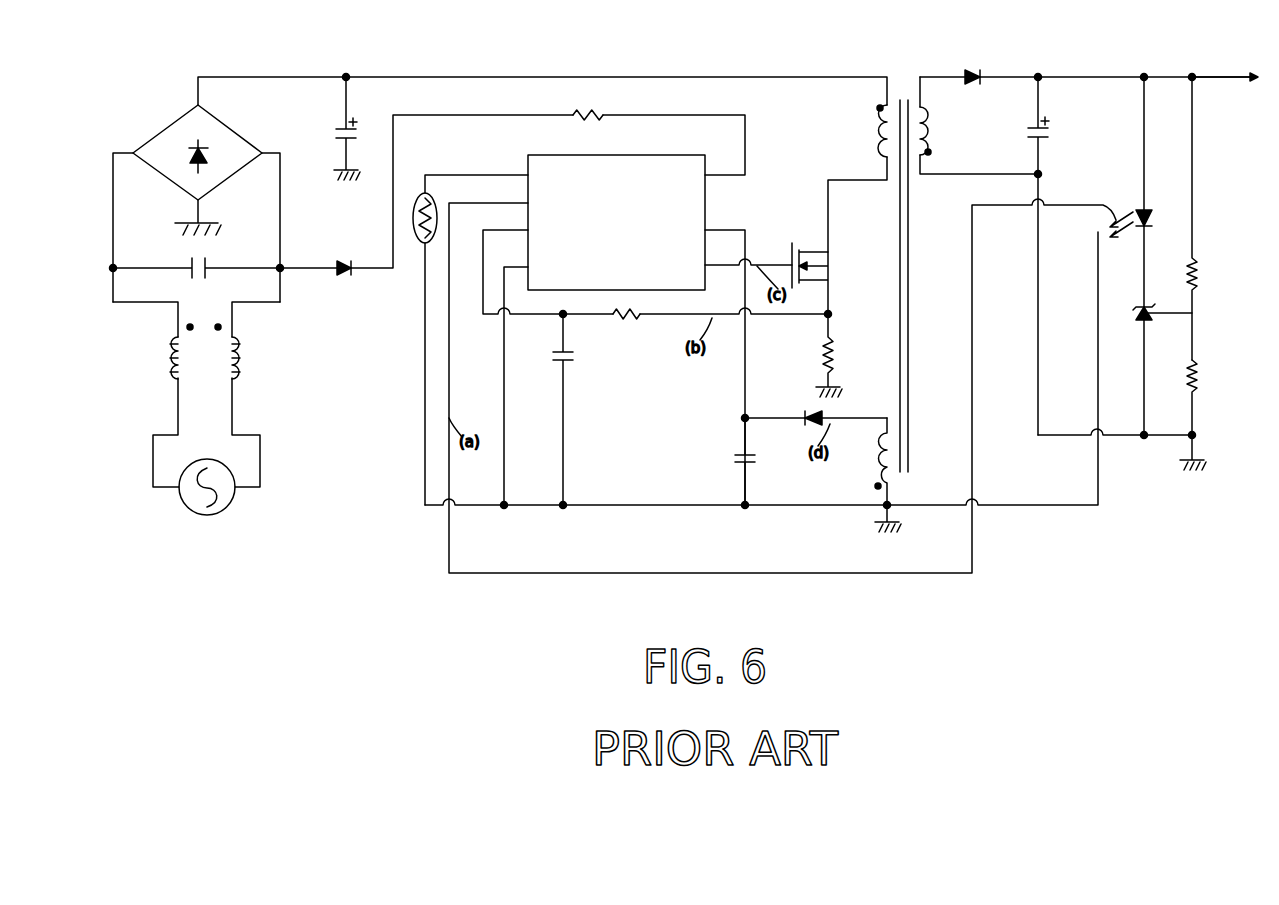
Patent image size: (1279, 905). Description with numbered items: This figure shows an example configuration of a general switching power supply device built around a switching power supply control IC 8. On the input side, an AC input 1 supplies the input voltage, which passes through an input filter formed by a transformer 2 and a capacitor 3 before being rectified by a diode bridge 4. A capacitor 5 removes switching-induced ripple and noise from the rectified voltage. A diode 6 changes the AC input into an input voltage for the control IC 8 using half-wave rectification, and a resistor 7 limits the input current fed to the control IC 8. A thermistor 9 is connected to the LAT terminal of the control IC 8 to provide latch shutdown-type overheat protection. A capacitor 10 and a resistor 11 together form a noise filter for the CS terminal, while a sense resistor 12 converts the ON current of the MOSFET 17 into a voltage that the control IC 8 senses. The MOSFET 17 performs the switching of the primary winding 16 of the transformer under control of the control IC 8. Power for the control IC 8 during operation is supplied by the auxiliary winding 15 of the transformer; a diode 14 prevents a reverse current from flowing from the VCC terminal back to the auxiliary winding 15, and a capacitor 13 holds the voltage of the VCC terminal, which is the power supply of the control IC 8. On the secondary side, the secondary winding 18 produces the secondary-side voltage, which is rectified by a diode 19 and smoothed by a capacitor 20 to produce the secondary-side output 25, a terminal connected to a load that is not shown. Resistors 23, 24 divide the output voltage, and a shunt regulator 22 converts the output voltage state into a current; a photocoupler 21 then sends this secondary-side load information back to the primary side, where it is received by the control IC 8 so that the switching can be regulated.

The AC input 1 is at (213, 512).
The transformer 2 is at (250, 360).
The capacitor 3 is at (208, 264).
The diode bridge 4 is at (166, 136).
The capacitor 5 is at (332, 134).
The diode 6 is at (348, 278).
The resistor 7 is at (605, 110).
The control IC 8 is at (646, 155).
The thermistor 9 is at (437, 205).
The capacitor 10 is at (575, 358).
The resistor 11 is at (629, 320).
The sense resistor 12 is at (834, 354).
The capacitor 13 is at (738, 458).
The diode 14 is at (835, 415).
The auxiliary winding 15 is at (897, 470).
The primary winding 16 is at (877, 126).
The MOSFET 17 is at (825, 265).
The secondary winding 18 is at (930, 128).
The diode 19 is at (975, 68).
The capacitor 20 is at (1048, 132).
The photocoupler 21 is at (1108, 230).
The shunt regulator 22 is at (1140, 322).
The resistor 23 is at (1202, 270).
The resistor 24 is at (1202, 375).
The secondary-side output 25 is at (1216, 75).